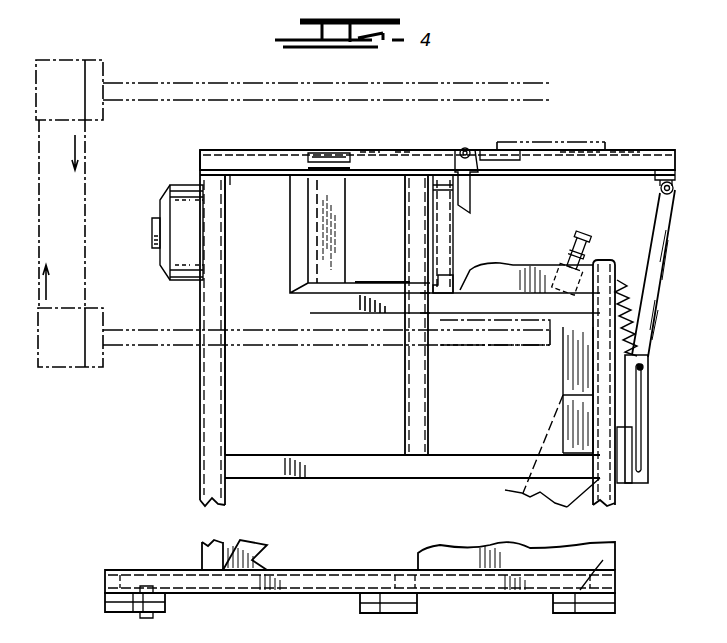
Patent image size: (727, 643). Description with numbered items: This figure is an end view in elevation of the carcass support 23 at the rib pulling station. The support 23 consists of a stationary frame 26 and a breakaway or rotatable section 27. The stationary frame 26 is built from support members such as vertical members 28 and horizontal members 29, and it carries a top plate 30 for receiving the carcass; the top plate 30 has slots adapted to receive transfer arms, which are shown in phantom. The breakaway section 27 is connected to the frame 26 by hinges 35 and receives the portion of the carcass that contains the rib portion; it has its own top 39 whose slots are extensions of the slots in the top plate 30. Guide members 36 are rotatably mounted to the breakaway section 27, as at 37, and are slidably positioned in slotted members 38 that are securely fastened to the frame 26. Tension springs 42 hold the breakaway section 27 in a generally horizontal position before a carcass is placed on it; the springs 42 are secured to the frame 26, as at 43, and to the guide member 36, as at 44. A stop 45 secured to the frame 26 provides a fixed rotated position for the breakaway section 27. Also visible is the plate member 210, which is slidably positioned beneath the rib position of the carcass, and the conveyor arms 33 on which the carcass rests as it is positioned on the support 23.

The arms 33 is at (200, 88).
The support 23 is at (253, 140).
The top plate 30 is at (280, 150).
The hinges 35 is at (468, 150).
The plate member 210 is at (590, 126).
The top 39 is at (614, 150).
The breakaway or rotatable section 27 is at (653, 153).
The rotatable mounting of guide member 37 is at (660, 190).
The stop 45 is at (567, 240).
The spring attachment to frame 43 is at (604, 268).
The tension springs 42 is at (622, 292).
The guide members 36 is at (655, 332).
The spring attachment to guide member 44 is at (648, 374).
The vertical members 28 is at (213, 415).
The stationary frame 26 is at (440, 401).
The horizontal members 29 is at (364, 460).
The slotted members 38 is at (642, 483).